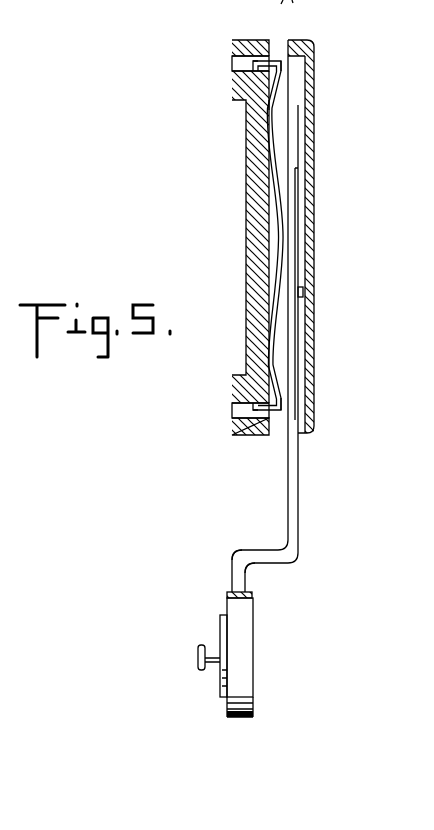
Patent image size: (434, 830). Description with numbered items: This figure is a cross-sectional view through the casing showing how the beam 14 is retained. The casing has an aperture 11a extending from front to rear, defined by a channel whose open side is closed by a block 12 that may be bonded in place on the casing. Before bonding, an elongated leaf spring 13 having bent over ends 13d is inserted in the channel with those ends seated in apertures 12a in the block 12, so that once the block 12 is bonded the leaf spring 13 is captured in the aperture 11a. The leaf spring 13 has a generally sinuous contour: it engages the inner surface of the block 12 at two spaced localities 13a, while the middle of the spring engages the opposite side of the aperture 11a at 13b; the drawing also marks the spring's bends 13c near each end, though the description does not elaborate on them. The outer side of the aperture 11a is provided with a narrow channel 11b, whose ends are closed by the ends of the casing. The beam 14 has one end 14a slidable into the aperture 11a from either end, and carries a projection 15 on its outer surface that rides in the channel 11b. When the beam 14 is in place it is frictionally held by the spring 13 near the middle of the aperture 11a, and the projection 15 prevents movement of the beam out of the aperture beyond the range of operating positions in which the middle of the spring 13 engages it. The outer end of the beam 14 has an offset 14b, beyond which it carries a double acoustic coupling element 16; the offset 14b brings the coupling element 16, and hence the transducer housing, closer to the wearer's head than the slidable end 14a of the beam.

The aperture 11a is at (292, 119).
The narrow channel 11b is at (299, 214).
The block 12 is at (254, 200).
The apertures 12a is at (250, 61).
The leaf spring 13 is at (283, 148).
The spring engagement localities 13a is at (270, 110).
The spring middle engagement 13b is at (288, 248).
The spring bends 13c is at (282, 72).
The bent over ends 13d is at (257, 60).
The beam 14 is at (298, 500).
The beam end 14a is at (295, 180).
The offset 14b is at (260, 558).
The projection 15 is at (303, 293).
The double acoustic coupling element 16 is at (240, 715).